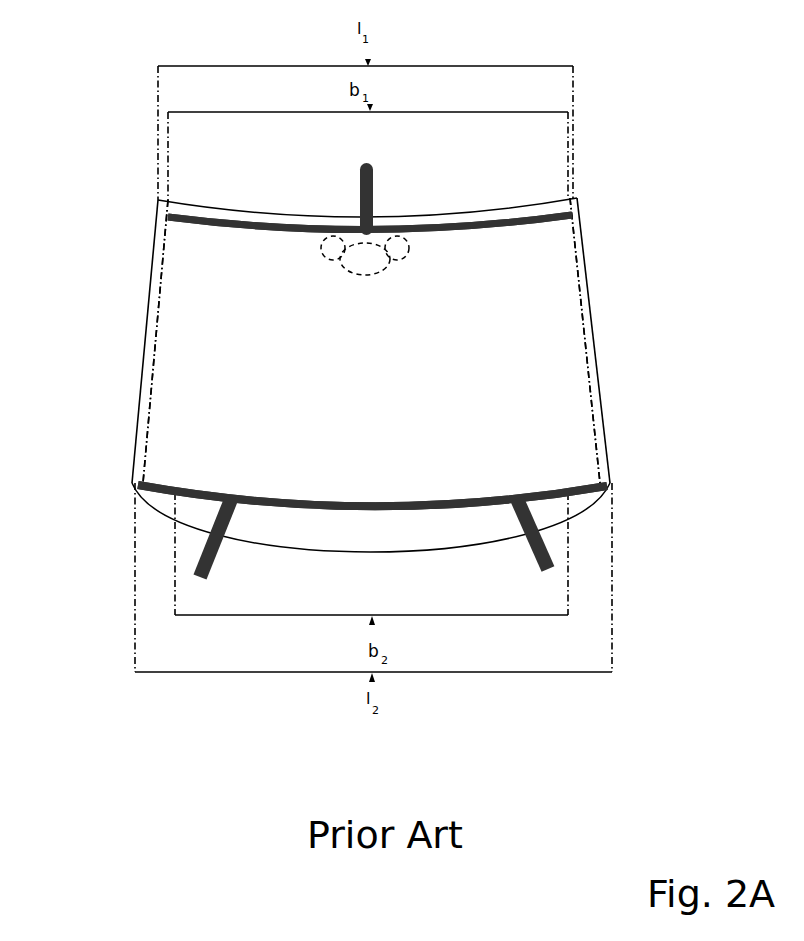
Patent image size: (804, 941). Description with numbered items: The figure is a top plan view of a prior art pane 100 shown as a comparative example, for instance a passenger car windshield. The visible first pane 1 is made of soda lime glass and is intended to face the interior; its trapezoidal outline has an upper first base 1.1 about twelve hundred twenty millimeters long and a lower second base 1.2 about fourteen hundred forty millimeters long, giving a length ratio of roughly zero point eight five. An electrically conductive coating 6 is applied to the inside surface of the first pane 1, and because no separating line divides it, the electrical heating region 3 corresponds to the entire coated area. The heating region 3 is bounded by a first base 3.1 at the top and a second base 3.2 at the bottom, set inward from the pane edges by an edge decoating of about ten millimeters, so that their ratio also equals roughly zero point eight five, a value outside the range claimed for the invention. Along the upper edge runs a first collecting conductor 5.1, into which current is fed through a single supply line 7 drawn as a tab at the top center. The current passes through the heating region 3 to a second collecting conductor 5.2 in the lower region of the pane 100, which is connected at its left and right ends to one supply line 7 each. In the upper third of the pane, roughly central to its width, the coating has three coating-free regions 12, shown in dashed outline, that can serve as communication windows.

The pane 100 is at (115, 165).
The first pane 1 is at (339, 377).
The first base 1.1 is at (303, 213).
The second base 1.2 is at (307, 548).
The electrical heating region 3 is at (150, 422).
The electrically conductive coating 6 is at (150, 422).
The first base of the electrical heating region 3.1 is at (226, 219).
The second base of the electrical heating region 3.2 is at (443, 509).
The first collecting conductor 5.1 is at (477, 225).
The second collecting conductor 5.2 is at (288, 508).
The supply line 7 is at (372, 183).
The coating-free region 12 is at (398, 250).